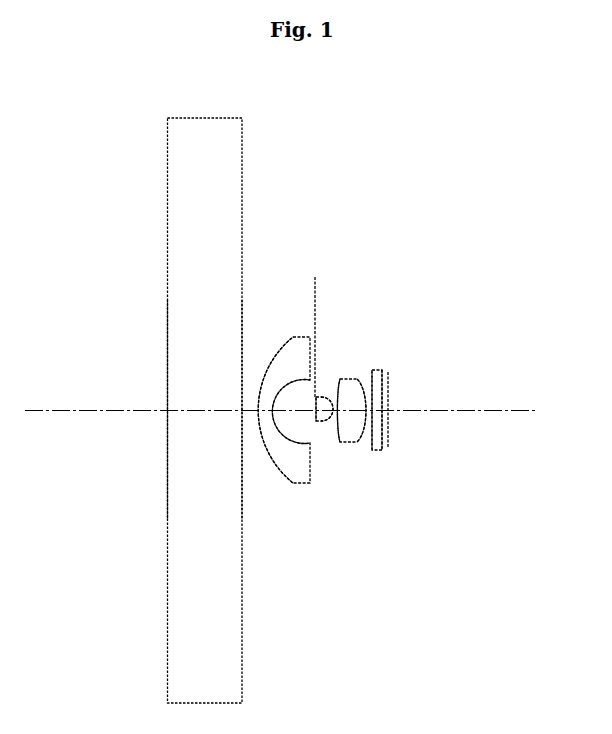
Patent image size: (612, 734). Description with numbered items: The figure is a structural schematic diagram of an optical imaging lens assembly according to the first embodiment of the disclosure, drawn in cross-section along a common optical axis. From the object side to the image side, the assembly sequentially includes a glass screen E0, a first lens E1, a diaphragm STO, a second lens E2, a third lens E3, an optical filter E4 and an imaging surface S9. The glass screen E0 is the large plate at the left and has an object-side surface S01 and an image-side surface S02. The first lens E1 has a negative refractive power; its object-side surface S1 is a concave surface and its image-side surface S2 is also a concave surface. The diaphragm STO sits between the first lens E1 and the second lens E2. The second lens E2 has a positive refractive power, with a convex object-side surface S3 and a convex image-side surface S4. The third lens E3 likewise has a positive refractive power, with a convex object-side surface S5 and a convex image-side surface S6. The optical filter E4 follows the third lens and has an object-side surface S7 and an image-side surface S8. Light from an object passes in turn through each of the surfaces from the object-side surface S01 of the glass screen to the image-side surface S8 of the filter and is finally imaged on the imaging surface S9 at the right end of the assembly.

The glass screen E0 is at (213, 395).
The object-side surface S01 is at (107, 429).
The image-side surface S02 is at (173, 429).
The first lens E1 is at (302, 336).
The object-side surface S1 is at (275, 447).
The image-side surface S2 is at (293, 469).
The diaphragm STO is at (316, 277).
The second lens E2 is at (330, 358).
The object-side surface S3 is at (335, 477).
The image-side surface S4 is at (356, 477).
The third lens E3 is at (349, 379).
The object-side surface S5 is at (377, 468).
The image-side surface S6 is at (407, 468).
The optical filter E4 is at (376, 370).
The object-side surface S7 is at (433, 464).
The image-side surface S8 is at (456, 464).
The imaging surface S9 is at (478, 465).